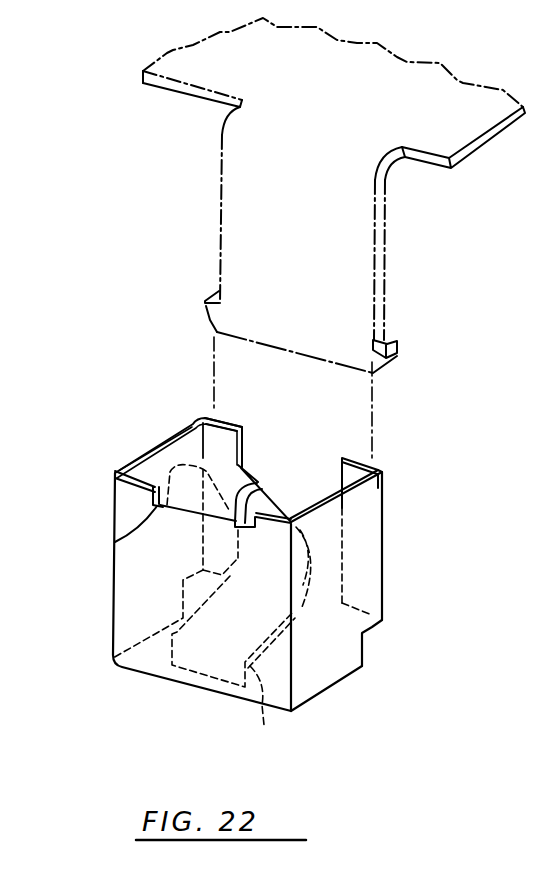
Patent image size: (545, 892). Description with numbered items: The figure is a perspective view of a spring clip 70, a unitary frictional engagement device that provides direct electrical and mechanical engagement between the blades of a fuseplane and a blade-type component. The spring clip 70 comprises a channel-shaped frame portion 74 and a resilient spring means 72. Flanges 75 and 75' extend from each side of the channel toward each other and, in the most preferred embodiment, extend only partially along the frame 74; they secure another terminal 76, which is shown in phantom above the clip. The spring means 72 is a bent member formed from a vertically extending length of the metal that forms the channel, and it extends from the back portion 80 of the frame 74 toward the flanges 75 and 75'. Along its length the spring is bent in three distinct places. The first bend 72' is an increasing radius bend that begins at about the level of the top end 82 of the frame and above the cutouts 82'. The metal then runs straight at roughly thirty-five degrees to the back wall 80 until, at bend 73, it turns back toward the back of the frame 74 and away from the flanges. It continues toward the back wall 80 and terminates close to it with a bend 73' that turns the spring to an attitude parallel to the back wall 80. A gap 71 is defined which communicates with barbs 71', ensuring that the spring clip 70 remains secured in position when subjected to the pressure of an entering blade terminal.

The spring clip 70 is at (383, 511).
The gap 71 is at (401, 644).
The barbs 71' is at (304, 326).
The resilient spring means 72 is at (279, 487).
The bend 72' is at (177, 486).
The bend 73 is at (279, 607).
The bend 73' is at (281, 715).
The frame portion 74 is at (340, 674).
The flange 75 is at (386, 517).
The flange 75' is at (243, 425).
The terminal 76 is at (372, 229).
The back portion 80 is at (123, 512).
The top end 82 is at (140, 448).
The cutouts 82' is at (197, 522).